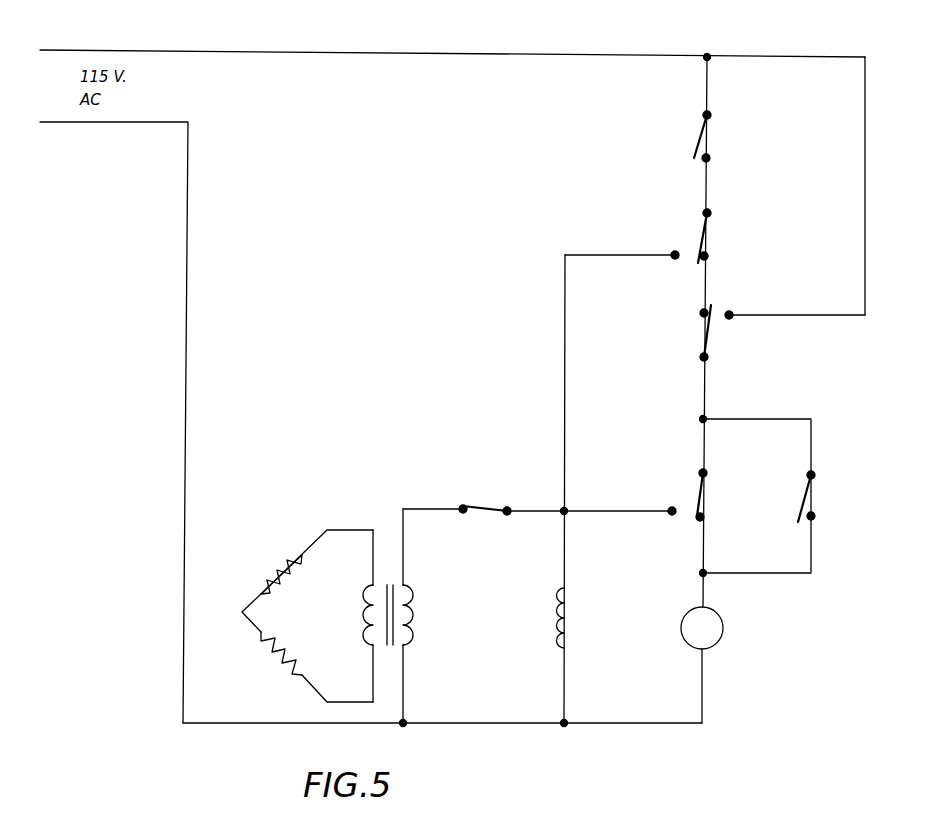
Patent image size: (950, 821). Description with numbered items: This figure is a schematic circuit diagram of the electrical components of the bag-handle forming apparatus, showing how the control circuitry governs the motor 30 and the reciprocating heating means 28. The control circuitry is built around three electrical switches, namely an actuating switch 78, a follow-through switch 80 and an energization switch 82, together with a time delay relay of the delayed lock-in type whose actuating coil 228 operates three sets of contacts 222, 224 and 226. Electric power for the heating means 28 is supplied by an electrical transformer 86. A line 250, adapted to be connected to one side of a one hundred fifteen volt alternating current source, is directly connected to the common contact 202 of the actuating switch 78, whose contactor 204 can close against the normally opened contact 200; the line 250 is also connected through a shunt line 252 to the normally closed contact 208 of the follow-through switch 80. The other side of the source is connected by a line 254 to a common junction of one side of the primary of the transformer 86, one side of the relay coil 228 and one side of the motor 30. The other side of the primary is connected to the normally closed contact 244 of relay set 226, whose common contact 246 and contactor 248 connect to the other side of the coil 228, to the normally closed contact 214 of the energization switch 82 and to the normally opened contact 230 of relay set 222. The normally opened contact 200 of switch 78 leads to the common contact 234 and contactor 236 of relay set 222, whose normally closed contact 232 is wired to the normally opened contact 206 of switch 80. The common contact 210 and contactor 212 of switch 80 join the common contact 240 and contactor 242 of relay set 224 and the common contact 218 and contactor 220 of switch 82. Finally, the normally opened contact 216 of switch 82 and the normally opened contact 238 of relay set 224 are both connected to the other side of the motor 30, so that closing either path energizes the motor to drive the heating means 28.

The line 250 is at (423, 53).
The shunt line 252 is at (866, 87).
The line 254 is at (186, 248).
The actuating switch 78 is at (712, 121).
The common contact 202 is at (709, 110).
The contactor 204 is at (700, 130).
The normally opened contact 200 is at (710, 160).
The set of contacts 222 is at (716, 235).
The common contact 234 is at (709, 212).
The contactor 236 is at (703, 235).
The normally closed contact 232 is at (708, 262).
The normally opened contact 230 is at (671, 259).
The normally closed contact 208 is at (731, 320).
The follow-through switch 80 is at (658, 346).
The normally opened contact 206 is at (702, 312).
The contactor 212 is at (704, 340).
The common contact 210 is at (703, 358).
The set of contacts 224 is at (795, 496).
The common contact 240 is at (813, 473).
The contactor 242 is at (800, 503).
The normally opened contact 238 is at (812, 522).
The energization switch 82 is at (705, 496).
The common contact 218 is at (707, 470).
The contactor 220 is at (706, 490).
The normally opened contact 216 is at (704, 522).
The normally closed contact 214 is at (668, 516).
The motor 30 is at (724, 625).
The actuating coil 228 is at (566, 605).
The set of contacts 226 is at (467, 519).
The normally closed contact 244 is at (460, 516).
The common contact 246 is at (508, 507).
The contactor 248 is at (485, 514).
The electrical transformer 86 is at (384, 572).
The heating means 28 is at (310, 621).